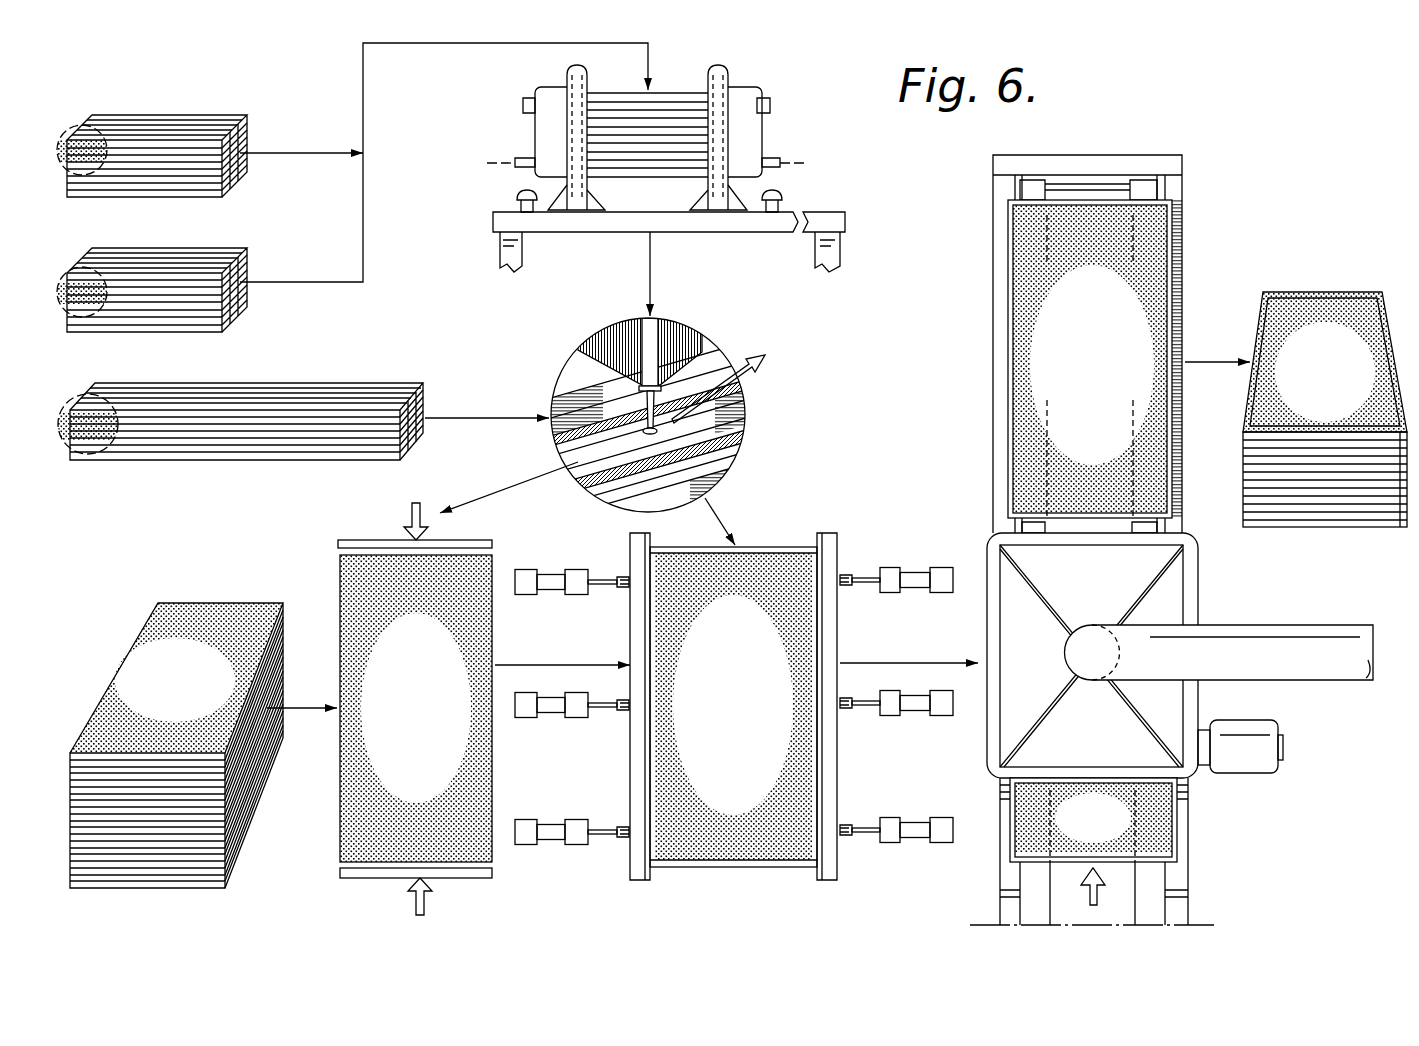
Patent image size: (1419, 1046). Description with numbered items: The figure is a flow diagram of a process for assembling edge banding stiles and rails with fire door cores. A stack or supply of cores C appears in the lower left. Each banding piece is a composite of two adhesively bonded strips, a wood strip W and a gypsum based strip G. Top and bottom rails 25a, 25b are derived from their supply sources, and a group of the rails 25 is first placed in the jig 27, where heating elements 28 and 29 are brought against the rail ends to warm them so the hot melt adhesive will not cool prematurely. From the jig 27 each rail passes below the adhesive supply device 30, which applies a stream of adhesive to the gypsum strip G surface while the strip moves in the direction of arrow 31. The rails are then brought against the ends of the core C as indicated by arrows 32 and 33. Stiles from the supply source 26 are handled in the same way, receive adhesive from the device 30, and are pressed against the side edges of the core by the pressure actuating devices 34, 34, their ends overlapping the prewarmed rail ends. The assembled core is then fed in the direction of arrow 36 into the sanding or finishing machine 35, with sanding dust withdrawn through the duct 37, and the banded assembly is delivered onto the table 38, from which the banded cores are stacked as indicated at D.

The top rail supply source 25a is at (178, 118).
The bottom rail supply source 25b is at (178, 265).
The stile supply source 26 is at (285, 395).
The jig 27 is at (743, 74).
The rails 25 is at (620, 93).
The heating element 28 is at (535, 131).
The heating element 29 is at (755, 132).
The adhesive supply device 30 is at (690, 346).
The strip movement arrow 31 is at (752, 372).
The rail positioning arrow 32 is at (410, 514).
The rail positioning arrow 33 is at (414, 906).
The pressure actuating devices 34 is at (560, 597).
The sanding or finishing machine 35 is at (1205, 580).
The feed direction arrow 36 is at (1092, 896).
The dust duct 37 is at (1250, 632).
The table 38 is at (1183, 212).
The gypsum strip G is at (80, 140).
The wood strip W is at (66, 152).
The core supply C is at (218, 606).
The stack of banded cores D is at (1092, 315).